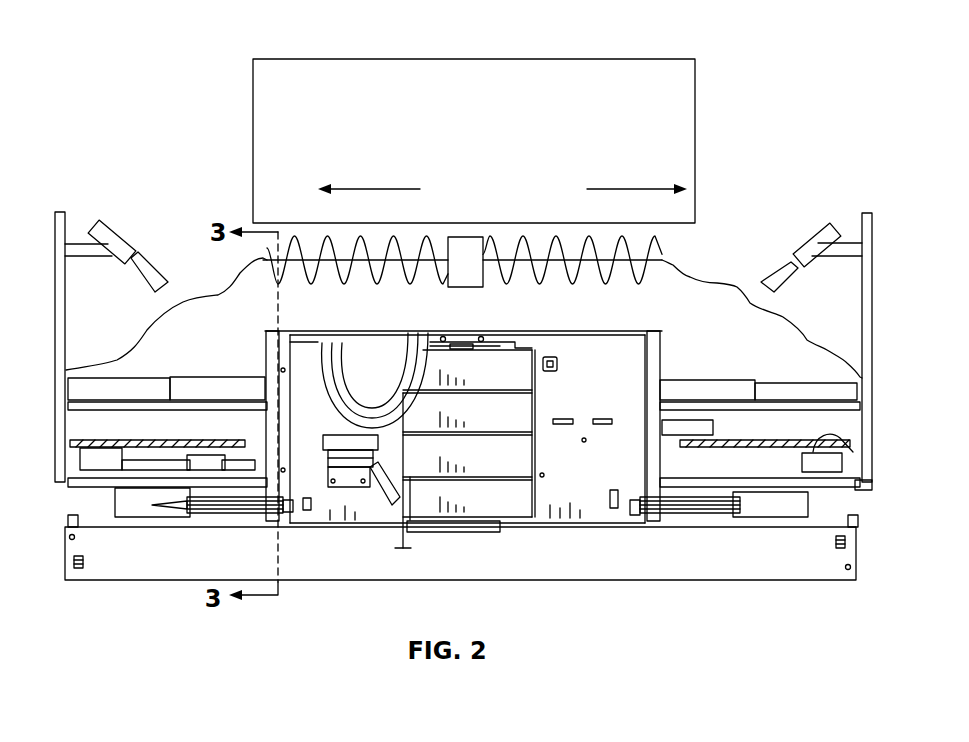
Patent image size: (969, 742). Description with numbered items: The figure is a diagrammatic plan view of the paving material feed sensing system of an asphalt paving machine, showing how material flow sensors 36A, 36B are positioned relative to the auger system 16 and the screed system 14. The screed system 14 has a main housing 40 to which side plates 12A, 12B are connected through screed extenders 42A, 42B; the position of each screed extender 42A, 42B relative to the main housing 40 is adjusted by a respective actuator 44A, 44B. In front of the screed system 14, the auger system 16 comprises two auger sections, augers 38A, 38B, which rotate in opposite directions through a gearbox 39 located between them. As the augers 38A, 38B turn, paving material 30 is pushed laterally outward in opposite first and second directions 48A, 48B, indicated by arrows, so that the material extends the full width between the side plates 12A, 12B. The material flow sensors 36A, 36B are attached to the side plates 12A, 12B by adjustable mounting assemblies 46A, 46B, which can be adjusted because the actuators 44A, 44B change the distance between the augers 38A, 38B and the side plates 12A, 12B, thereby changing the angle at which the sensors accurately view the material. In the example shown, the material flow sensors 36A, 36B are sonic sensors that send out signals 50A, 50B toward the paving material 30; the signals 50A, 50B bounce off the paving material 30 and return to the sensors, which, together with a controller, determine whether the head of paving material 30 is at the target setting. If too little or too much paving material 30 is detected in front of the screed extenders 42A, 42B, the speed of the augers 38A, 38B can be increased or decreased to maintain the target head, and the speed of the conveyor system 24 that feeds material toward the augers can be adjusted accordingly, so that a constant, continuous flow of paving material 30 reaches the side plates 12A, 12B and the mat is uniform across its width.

The screed side plate 12A is at (60, 212).
The side plate 12B is at (867, 213).
The screed system 14 is at (54, 495).
The auger system 16 is at (678, 242).
The conveyor system 24 is at (696, 151).
The paving material 30 is at (219, 296).
The material flow sensor 36A is at (115, 232).
The material flow sensor 36B is at (806, 235).
The auger 38A is at (306, 234).
The auger 38B is at (533, 234).
The gearbox 39 is at (466, 237).
The main housing 40 is at (550, 331).
The screed extender 42A is at (137, 412).
The screed extender 42B is at (755, 410).
The actuator 44A is at (215, 377).
The actuator 44B is at (683, 385).
The adjustable mounting assembly 46A is at (86, 258).
The adjustable mounting assembly 46B is at (840, 258).
The first direction 48A is at (366, 188).
The second direction 48B is at (640, 188).
The signal 50A is at (163, 270).
The signal 50B is at (778, 270).